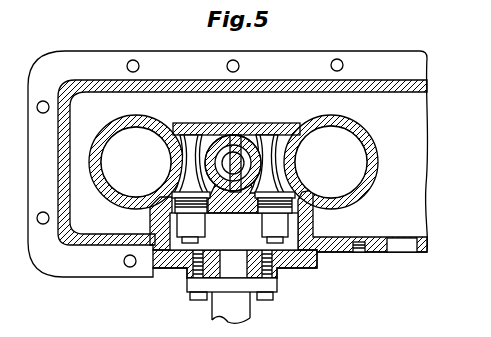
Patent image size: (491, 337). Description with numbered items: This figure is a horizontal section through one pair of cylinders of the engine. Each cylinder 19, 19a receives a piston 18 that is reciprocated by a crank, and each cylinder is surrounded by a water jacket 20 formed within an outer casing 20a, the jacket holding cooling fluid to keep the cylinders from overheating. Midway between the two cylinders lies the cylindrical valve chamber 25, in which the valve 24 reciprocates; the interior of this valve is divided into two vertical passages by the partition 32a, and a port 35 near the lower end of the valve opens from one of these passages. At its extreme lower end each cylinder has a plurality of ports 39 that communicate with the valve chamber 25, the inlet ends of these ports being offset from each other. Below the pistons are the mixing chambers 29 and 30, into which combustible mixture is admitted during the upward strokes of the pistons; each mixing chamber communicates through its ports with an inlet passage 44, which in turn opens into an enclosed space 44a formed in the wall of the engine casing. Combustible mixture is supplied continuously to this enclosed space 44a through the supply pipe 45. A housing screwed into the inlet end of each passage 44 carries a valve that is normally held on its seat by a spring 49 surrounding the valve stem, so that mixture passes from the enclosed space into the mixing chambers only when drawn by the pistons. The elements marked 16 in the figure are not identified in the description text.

The bolt head 16 is at (267, 228).
The piston 18 is at (96, 179).
The cylinder 19 is at (136, 162).
The cylinder 19a is at (356, 134).
The water jacket 20 is at (323, 97).
The outer casing 20a is at (367, 92).
The valve 24 is at (263, 178).
The valve chamber 25 is at (234, 231).
The mixing chamber 29 is at (113, 198).
The mixing chamber 30 is at (362, 156).
The partition 32a is at (241, 136).
The port 35 is at (214, 137).
The port 39 is at (190, 131).
The inlet passage 44 is at (174, 123).
The enclosed space 44a is at (293, 246).
The supply pipe 45 is at (244, 310).
The spring 49 is at (173, 181).